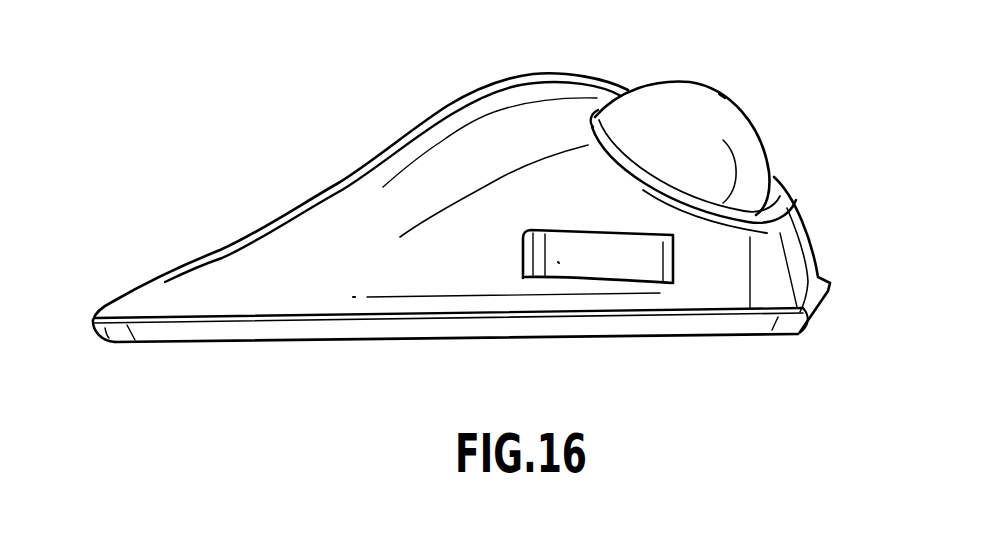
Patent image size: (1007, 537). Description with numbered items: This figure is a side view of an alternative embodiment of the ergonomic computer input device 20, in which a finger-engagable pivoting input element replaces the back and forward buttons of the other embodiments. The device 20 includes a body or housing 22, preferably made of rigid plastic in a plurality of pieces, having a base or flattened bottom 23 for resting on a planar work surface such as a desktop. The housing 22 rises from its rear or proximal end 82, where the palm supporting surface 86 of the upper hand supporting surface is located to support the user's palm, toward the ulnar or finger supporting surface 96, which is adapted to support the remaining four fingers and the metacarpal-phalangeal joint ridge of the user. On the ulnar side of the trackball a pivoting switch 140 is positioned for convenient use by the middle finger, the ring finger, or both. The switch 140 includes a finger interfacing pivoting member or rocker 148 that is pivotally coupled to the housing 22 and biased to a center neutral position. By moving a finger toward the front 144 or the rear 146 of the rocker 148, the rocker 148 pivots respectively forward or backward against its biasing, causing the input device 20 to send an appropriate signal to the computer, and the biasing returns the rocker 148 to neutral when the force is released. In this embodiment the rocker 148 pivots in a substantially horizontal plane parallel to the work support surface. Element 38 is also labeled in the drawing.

The computer input device 20 is at (288, 113).
The housing 22 is at (447, 158).
The base 23 is at (195, 342).
The rear lip 38 is at (823, 277).
The rear or proximal end 82 is at (140, 297).
The palm supporting surface 86 is at (241, 261).
The ulnar or finger supporting surface 96 is at (540, 110).
The pivoting switch 140 is at (562, 278).
The front of the rocker 144 is at (659, 277).
The rear of the rocker 146 is at (522, 262).
The rocker 148 is at (623, 283).